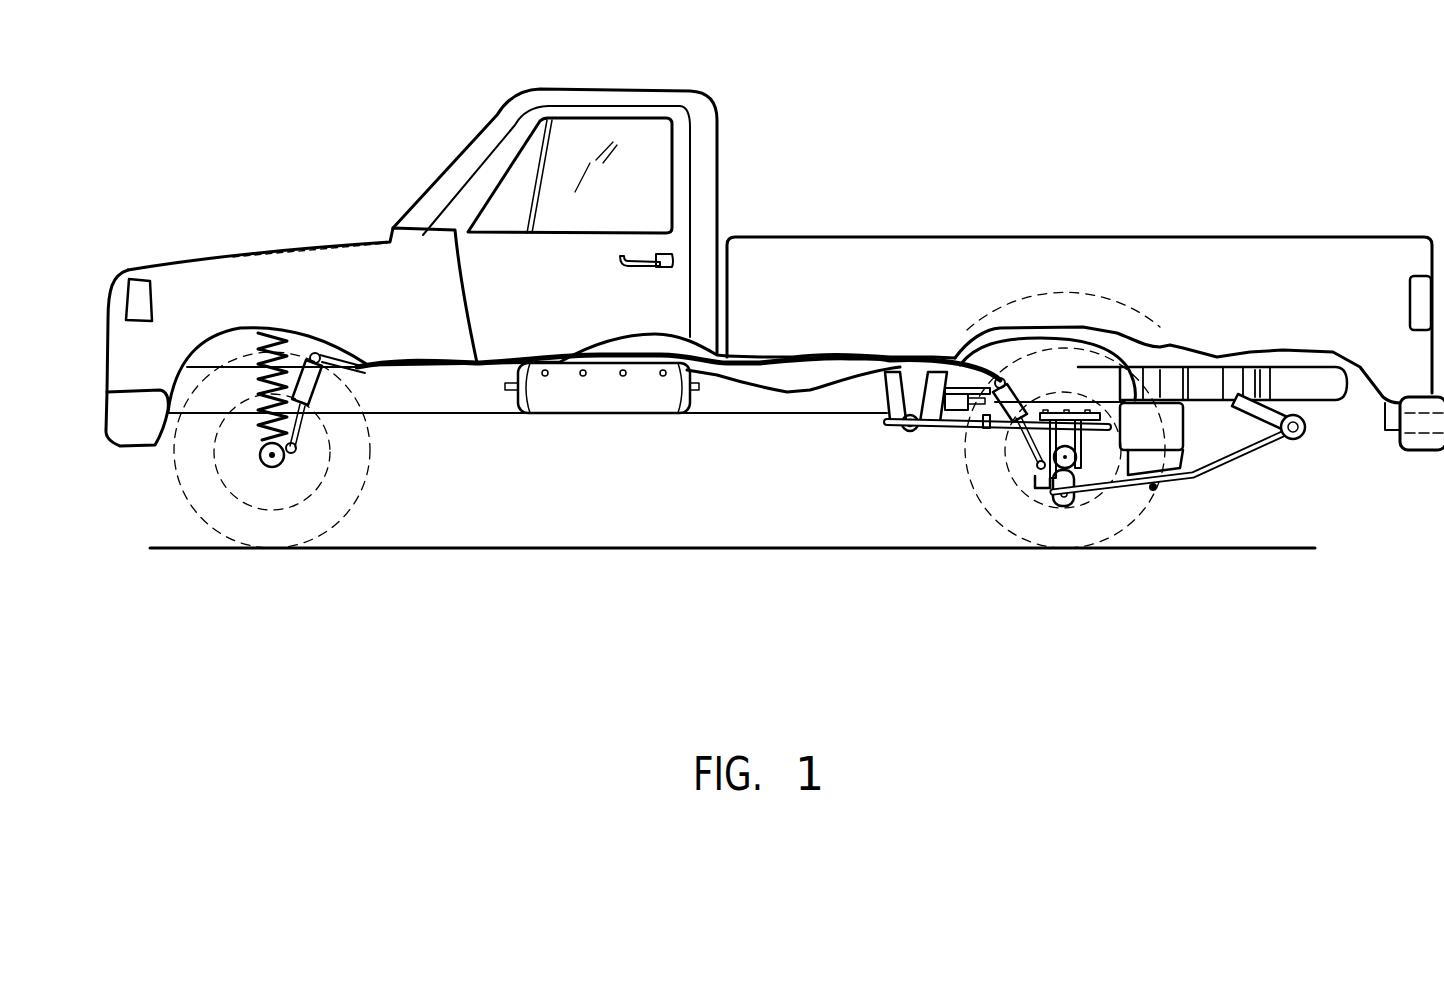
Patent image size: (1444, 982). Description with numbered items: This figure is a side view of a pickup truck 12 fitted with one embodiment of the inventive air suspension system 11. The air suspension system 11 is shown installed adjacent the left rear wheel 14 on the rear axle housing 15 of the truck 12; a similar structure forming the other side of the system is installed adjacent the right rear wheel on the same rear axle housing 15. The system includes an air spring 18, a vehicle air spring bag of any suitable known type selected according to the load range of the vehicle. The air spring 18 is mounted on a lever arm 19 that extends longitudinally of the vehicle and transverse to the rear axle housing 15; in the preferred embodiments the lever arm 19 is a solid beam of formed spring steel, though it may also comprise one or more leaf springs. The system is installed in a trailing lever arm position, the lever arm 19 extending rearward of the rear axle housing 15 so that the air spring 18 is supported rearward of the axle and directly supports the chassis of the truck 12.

The air suspension system 11 is at (1217, 468).
The pickup truck 12 is at (720, 202).
The left rear wheel 14 is at (1135, 523).
The rear axle housing 15 is at (1048, 487).
The air spring 18 is at (1153, 487).
The lever arm 19 is at (1247, 450).